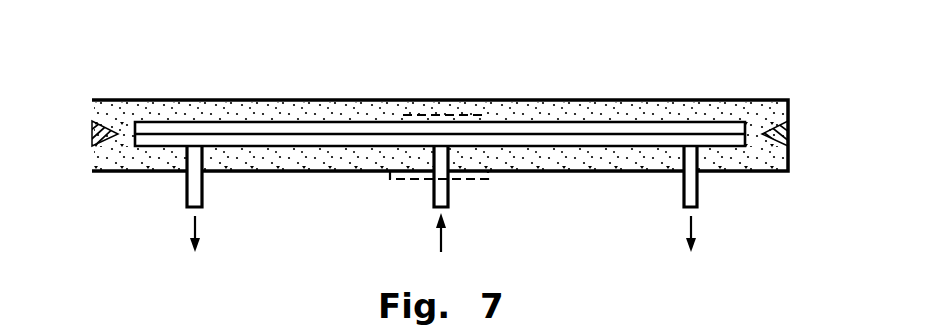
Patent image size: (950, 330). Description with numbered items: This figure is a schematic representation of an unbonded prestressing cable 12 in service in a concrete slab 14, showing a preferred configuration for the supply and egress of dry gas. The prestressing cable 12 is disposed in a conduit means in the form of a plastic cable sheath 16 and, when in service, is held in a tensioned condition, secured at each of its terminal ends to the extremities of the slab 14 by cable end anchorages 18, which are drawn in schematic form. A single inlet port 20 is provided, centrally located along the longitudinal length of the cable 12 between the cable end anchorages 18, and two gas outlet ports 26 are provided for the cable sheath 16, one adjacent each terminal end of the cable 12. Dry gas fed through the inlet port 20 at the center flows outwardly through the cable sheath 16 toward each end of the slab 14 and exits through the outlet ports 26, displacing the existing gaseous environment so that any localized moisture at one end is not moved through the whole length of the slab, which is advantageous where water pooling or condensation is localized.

The prestressing cable 12 is at (123, 133).
The slab 14 is at (217, 108).
The cable sheath 16 is at (318, 120).
The cable end anchorages 18 is at (92, 133).
The inlet port 20 is at (425, 204).
The gas outlet ports 26 is at (392, 203).